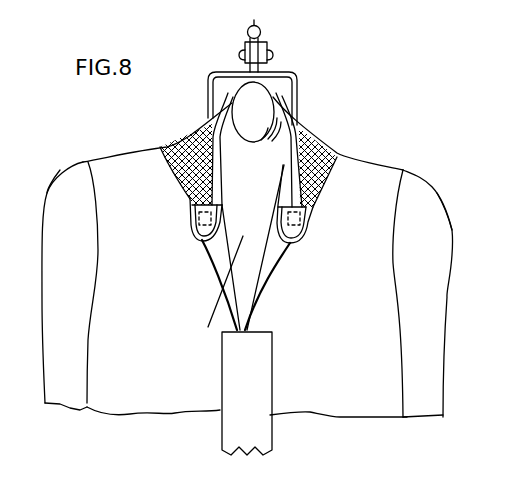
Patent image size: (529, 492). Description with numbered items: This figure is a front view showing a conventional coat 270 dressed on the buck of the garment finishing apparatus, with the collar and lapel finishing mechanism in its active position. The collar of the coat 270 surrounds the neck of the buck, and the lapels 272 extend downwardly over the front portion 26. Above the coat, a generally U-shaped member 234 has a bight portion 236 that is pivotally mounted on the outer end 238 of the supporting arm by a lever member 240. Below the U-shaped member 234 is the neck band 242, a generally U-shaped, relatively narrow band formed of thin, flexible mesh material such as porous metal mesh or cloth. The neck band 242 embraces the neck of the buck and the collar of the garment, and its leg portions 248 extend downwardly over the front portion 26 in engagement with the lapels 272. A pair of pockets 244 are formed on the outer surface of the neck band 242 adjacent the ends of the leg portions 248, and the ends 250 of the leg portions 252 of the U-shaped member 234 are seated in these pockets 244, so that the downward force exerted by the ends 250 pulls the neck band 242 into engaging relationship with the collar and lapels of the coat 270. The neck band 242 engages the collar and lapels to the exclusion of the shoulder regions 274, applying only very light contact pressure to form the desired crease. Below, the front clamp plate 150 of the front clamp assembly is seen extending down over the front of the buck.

The front portion 26 is at (218, 290).
The front clamp plate 150 is at (263, 362).
The U-shaped member 234 is at (303, 89).
The bight portion 236 is at (288, 73).
The outer end 238 is at (262, 45).
The lever member 240 is at (247, 35).
The neck band 242 is at (350, 122).
The pockets 244 is at (207, 242).
The leg portions 248 is at (185, 178).
The ends 250 is at (187, 222).
The leg portions 252 is at (205, 152).
The coat 270 is at (372, 335).
The lapels 272 is at (222, 255).
The shoulder regions 274 is at (108, 155).